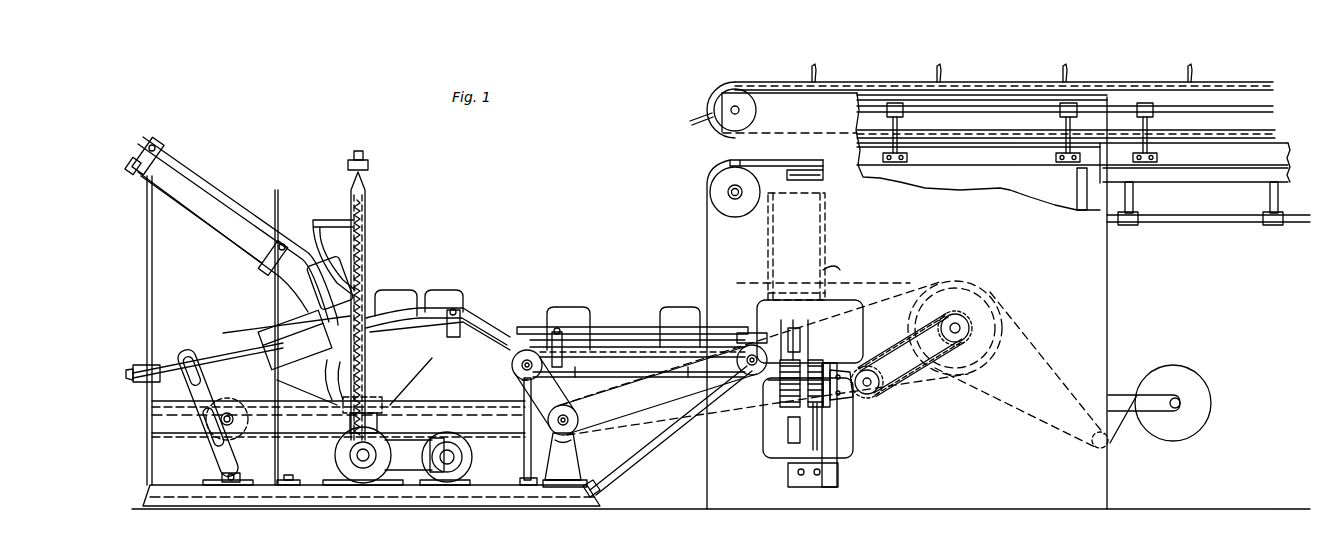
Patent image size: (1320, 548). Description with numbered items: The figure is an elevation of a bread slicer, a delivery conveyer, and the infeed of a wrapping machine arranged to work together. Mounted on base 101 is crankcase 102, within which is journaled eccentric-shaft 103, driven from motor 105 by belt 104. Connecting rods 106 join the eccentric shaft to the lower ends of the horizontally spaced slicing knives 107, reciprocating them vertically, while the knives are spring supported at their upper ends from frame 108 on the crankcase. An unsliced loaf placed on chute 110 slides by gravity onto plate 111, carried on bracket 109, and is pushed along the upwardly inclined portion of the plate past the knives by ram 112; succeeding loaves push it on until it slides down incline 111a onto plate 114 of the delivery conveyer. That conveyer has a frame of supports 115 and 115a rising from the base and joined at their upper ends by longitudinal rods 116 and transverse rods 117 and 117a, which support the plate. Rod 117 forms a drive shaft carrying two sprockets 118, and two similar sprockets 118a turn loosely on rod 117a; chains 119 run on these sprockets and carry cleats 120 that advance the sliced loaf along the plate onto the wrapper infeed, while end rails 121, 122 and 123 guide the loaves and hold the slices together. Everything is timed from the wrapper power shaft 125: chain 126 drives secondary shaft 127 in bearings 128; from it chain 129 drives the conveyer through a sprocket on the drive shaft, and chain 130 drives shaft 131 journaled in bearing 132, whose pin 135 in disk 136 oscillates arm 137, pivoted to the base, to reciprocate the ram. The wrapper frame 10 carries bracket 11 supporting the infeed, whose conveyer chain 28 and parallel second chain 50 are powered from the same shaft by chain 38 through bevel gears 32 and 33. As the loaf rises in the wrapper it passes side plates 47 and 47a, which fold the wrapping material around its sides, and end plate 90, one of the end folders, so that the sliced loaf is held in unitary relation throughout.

The wrapper frame 10 is at (907, 301).
The bracket 11 is at (850, 480).
The conveyer chain 28 is at (787, 404).
The bevel gear 32 is at (852, 410).
The bevel gear 33 is at (876, 398).
The chain 38 is at (917, 378).
The side plate 47 is at (768, 258).
The side plate 47a is at (835, 262).
The second chain 50 is at (825, 408).
The end plate 90 is at (800, 224).
The base 101 is at (471, 500).
The crankcase 102 is at (336, 454).
The eccentric-shaft 103 is at (365, 463).
The belt 104 is at (416, 468).
The motor 105 is at (464, 457).
The connecting rods 106 is at (383, 385).
The slicing knives 107 is at (363, 274).
The frame 108 is at (381, 214).
The bracket 109 is at (443, 368).
The chute 110 is at (200, 216).
The plate 111 is at (316, 349).
The incline 111a is at (441, 353).
The ram 112 is at (290, 350).
The plate 114 is at (614, 352).
The support 115 is at (524, 467).
The support 115a is at (647, 456).
The longitudinal rods 116 is at (634, 360).
The transverse rod 117 is at (525, 356).
The transverse rod 117a is at (746, 374).
The sprockets 118 is at (527, 350).
The sprockets 118a is at (766, 387).
The chains 119 is at (600, 350).
The cleats 120 is at (653, 340).
The end rail 121 is at (217, 197).
The end rail 122 is at (444, 306).
The end rail 123 is at (575, 330).
The wrapper power shaft 125 is at (1000, 315).
The chain 126 is at (619, 431).
The secondary shaft 127 is at (580, 420).
The bearings 128 is at (573, 464).
The chain 129 is at (518, 384).
The chain 130 is at (445, 411).
The shaft 131 is at (233, 414).
The bearing 132 is at (215, 463).
The pin 135 is at (218, 432).
The disk 136 is at (248, 418).
The arm 137 is at (217, 330).